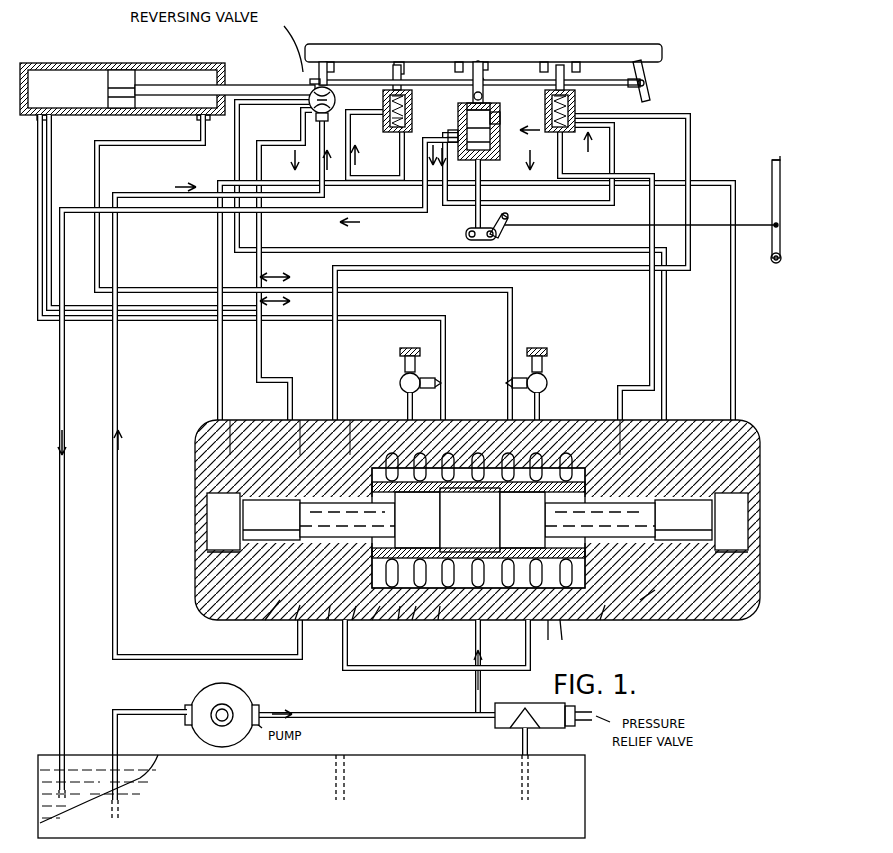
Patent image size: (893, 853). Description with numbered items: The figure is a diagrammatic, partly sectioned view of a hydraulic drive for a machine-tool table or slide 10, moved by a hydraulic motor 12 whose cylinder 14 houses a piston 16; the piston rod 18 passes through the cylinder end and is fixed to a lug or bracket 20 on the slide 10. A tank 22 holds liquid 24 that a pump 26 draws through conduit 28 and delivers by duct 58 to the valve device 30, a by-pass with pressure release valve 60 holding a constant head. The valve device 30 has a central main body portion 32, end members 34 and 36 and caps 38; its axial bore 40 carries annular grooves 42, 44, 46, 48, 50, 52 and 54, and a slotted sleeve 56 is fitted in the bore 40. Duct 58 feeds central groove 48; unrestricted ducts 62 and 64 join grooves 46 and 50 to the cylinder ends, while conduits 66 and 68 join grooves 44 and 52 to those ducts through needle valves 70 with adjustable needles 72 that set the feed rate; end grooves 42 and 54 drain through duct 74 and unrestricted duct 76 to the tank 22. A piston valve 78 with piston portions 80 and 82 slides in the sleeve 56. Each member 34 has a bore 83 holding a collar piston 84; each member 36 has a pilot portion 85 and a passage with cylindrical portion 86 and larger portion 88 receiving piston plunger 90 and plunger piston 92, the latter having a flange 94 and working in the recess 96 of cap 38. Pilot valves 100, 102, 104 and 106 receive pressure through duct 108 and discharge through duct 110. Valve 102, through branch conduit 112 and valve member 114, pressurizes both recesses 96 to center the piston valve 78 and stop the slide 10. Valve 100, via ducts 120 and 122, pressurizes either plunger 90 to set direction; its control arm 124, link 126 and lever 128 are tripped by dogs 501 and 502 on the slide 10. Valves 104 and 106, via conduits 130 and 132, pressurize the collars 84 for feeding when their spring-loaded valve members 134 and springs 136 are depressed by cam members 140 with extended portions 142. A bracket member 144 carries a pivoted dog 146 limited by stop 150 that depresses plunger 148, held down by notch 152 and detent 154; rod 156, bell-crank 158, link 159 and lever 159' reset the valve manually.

The table or slide 10 is at (664, 54).
The hydraulic motor 12 is at (66, 58).
The cylinder 14 is at (85, 66).
The piston 16 is at (125, 72).
The piston rod 18 is at (170, 86).
The lug or bracket 20 is at (306, 76).
The tank 22 is at (311, 796).
The liquid 24 is at (134, 784).
The pump 26 is at (206, 690).
The conduit 28 is at (136, 704).
The valve device 30 is at (188, 450).
The central main body portion 32 is at (514, 418).
The end member 34 is at (338, 412).
The end member 36 is at (296, 412).
The cap 38 is at (200, 422).
The axial bore 40 is at (334, 625).
The annular groove 42 is at (359, 631).
The annular groove 44 is at (403, 625).
The annular groove 46 is at (417, 632).
The central groove 48 is at (439, 629).
The annular groove 50 is at (489, 666).
The annular groove 52 is at (549, 636).
The annular groove 54 is at (567, 638).
The sleeve 56 is at (618, 412).
The duct 58 is at (384, 718).
The pressure release valve 60 is at (552, 730).
The unrestricted duct 62 is at (48, 160).
The unrestricted duct 64 is at (182, 148).
The conduit 66 is at (406, 404).
The conduit 68 is at (541, 404).
The needle valve 70 is at (400, 381).
The adjustable needle or valve member 72 is at (400, 352).
The duct 74 is at (377, 636).
The unrestricted duct 76 is at (396, 672).
The piston valve 78 is at (470, 520).
The piston portion 80 is at (417, 520).
The piston portion 82 is at (522, 520).
The central bore 83 is at (456, 624).
The piston member 84 is at (458, 647).
The pilot portion 85 is at (468, 610).
The cylindrical portion 86 is at (477, 519).
The portion of larger diameter 88 is at (477, 513).
The piston plunger 90 is at (477, 515).
The plunger piston 92 is at (477, 518).
The flange 94 is at (207, 546).
The recess or pocket 96 is at (206, 504).
The pilot valve 100 is at (310, 104).
The pilot valve 102 is at (502, 110).
The pilot valve 104 is at (412, 102).
The pilot valve 106 is at (585, 80).
The duct 108 is at (338, 197).
The duct 110 is at (370, 216).
The branch conduit 112 is at (756, 332).
The valve member 114 is at (457, 136).
The duct 120 is at (236, 158).
The duct 122 is at (288, 140).
The control arm 124 is at (327, 76).
The link 126 is at (395, 64).
The lever 128 is at (648, 90).
The conduit 130 is at (370, 160).
The conduit 132 is at (640, 122).
The piston valve member 134 is at (384, 100).
The spring 136 is at (412, 116).
The cam member 140 is at (575, 62).
The extended portion 142 is at (544, 62).
The bracket member 144 is at (484, 62).
The dog 146 is at (490, 62).
The plunger 148 is at (490, 98).
The stop 150 is at (482, 61).
The notch 152 is at (468, 102).
The spring pressed detent 154 is at (500, 116).
The rod 156 is at (482, 218).
The bell-crank 158 is at (500, 238).
The link 159 is at (641, 233).
The manually controllable lever 159' is at (758, 206).
The dog 501 is at (373, 62).
The dog 502 is at (590, 48).